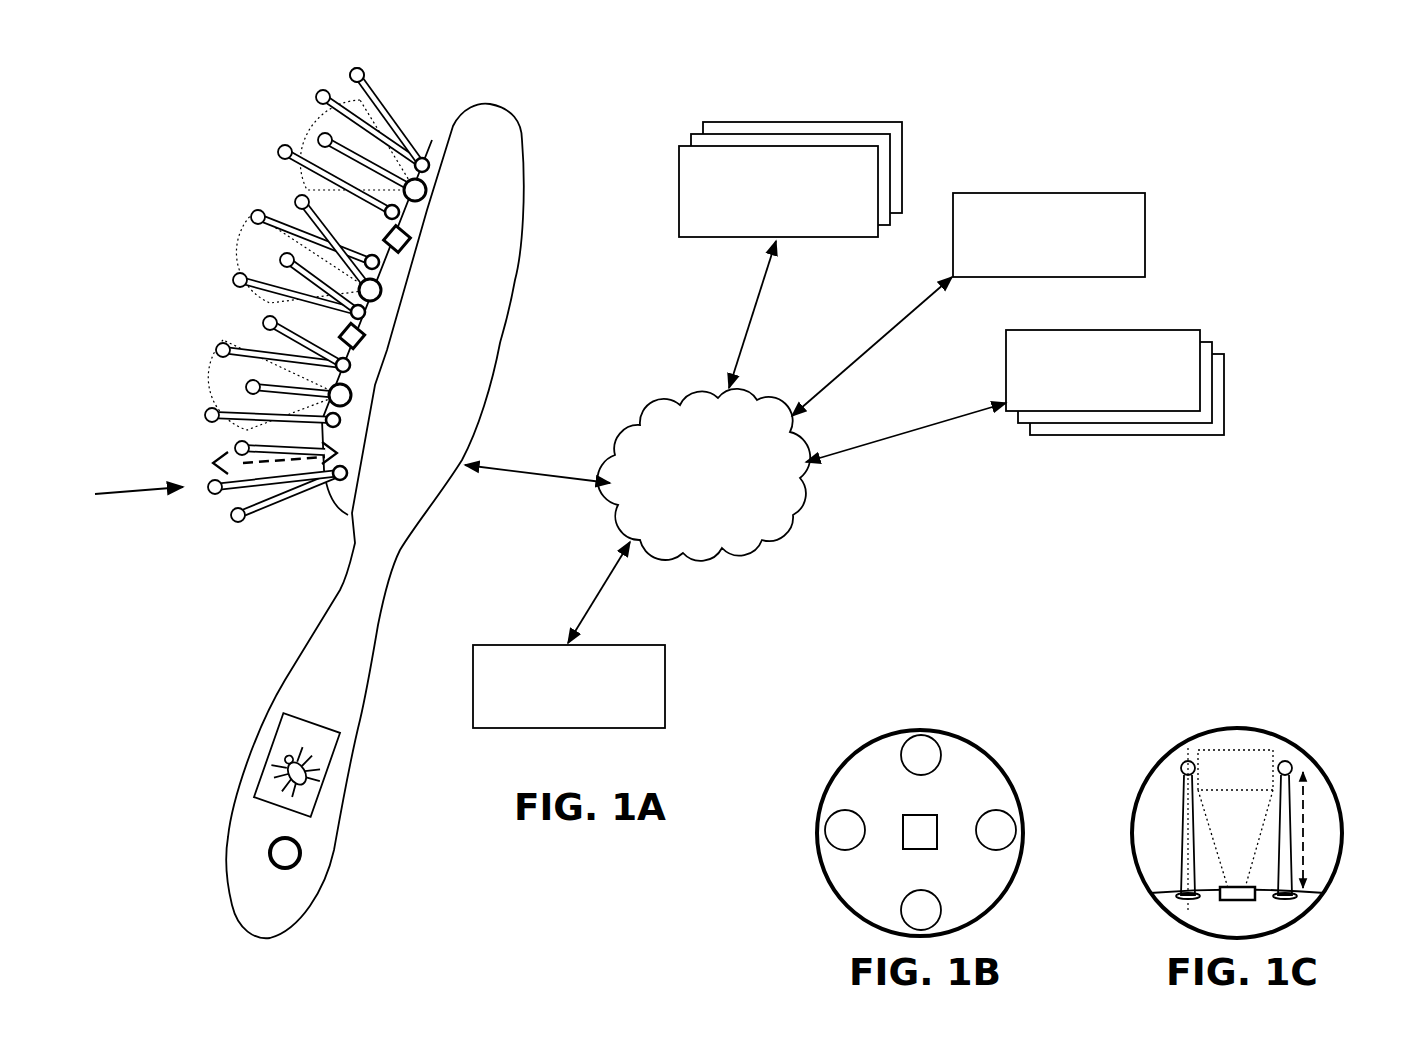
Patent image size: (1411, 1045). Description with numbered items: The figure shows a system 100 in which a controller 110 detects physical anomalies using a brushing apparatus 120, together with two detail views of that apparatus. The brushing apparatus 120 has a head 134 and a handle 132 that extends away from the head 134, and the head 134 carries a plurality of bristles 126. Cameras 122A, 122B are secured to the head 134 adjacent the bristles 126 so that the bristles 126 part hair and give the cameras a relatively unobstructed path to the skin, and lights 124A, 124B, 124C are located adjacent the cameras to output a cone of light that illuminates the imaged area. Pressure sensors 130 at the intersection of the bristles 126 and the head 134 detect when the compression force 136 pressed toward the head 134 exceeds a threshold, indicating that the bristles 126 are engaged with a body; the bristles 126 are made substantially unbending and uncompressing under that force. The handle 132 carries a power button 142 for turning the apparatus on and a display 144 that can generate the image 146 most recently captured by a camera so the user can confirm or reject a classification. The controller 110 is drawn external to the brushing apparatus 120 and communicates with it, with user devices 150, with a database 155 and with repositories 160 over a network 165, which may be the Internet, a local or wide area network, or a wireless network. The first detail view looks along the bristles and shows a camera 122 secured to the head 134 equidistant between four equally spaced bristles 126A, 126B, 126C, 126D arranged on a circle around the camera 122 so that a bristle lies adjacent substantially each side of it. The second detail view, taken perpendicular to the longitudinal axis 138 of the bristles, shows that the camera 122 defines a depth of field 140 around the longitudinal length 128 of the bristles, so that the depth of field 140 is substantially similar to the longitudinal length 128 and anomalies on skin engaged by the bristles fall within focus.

In FIG. 1A, the system 100 is at (1247, 107).
In FIG. 1A, the controller 110 is at (569, 635).
In FIG. 1A, the brushing apparatus 120 is at (345, 698).
In FIG. 1B, the camera 122 is at (930, 818).
In FIG. 1C, the camera 122 is at (1245, 893).
In FIG. 1A, the camera 122A is at (410, 238).
In FIG. 1A, the camera 122B is at (364, 336).
In FIG. 1A, the light 124A is at (426, 190).
In FIG. 1A, the light 124B is at (382, 288).
In FIG. 1A, the light 124C is at (352, 393).
In FIG. 1A, the bristles 126 is at (430, 126).
In FIG. 1C, the bristles 126 is at (1292, 765).
In FIG. 1B, the bristle 126A is at (920, 748).
In FIG. 1B, the bristle 126B is at (840, 842).
In FIG. 1B, the bristle 126C is at (1000, 840).
In FIG. 1B, the bristle 126D is at (930, 905).
In FIG. 1A, the longitudinal length 128 is at (218, 466).
In FIG. 1C, the longitudinal length 128 is at (1305, 830).
In FIG. 1A, the pressure sensors 130 is at (340, 505).
In FIG. 1A, the handle 132 is at (122, 777).
In FIG. 1A, the head 134 is at (205, 197).
In FIG. 1B, the head 134 is at (880, 770).
In FIG. 1A, the compression force 136 is at (112, 498).
In FIG. 1C, the longitudinal axis 138 is at (1185, 832).
In FIG. 1C, the depth of field 140 is at (1234, 748).
In FIG. 1A, the power button 142 is at (287, 860).
In FIG. 1A, the display 144 is at (330, 772).
In FIG. 1A, the image 146 is at (278, 753).
In FIG. 1A, the user devices 150 is at (790, 255).
In FIG. 1A, the database 155 is at (968, 304).
In FIG. 1A, the repositories 160 is at (1015, 396).
In FIG. 1A, the network 165 is at (703, 475).